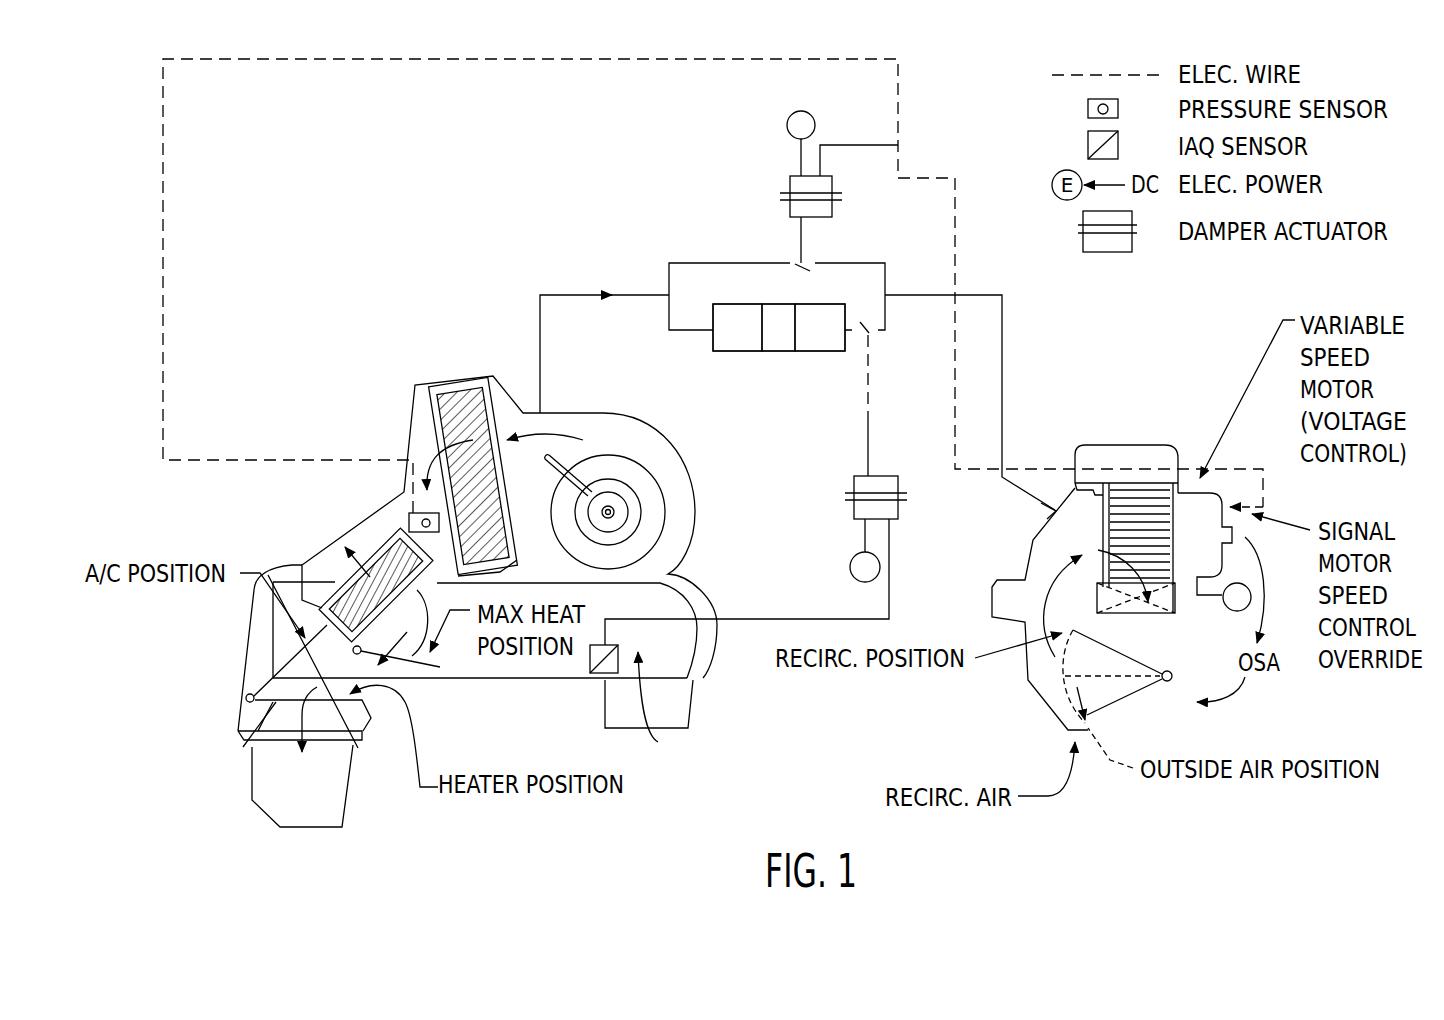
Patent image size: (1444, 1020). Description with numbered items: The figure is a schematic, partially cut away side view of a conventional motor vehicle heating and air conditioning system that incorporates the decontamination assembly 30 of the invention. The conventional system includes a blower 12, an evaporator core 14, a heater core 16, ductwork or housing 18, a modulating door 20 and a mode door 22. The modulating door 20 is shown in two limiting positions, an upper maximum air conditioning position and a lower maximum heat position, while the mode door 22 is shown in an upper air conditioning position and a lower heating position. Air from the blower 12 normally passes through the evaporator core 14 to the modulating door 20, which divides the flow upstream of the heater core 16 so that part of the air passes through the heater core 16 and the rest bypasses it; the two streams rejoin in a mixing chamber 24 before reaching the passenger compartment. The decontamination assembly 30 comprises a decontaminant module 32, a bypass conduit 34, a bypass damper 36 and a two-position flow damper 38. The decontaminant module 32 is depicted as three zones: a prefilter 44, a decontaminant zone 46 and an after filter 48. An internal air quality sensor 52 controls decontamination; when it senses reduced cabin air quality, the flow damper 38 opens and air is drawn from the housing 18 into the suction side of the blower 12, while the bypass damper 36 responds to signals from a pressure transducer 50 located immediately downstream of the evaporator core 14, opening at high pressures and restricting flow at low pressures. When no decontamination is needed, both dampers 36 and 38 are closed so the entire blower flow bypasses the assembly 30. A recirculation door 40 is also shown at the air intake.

The blower 12 is at (673, 502).
The evaporator core 14 is at (493, 380).
The heater core 16 is at (382, 542).
The ductwork or housing 18 is at (410, 410).
The modulating door 20 is at (396, 628).
The mode door 22 is at (243, 747).
The mixing chamber 24 is at (352, 753).
The decontamination assembly 30 is at (600, 198).
The decontaminant module 32 is at (704, 354).
The bypass conduit 34 is at (702, 263).
The bypass damper 36 is at (810, 258).
The two-position flow damper 38 is at (872, 337).
The recirculation door 40 is at (1128, 657).
The prefilter 44 is at (745, 345).
The decontaminant zone 46 is at (782, 337).
The after filter 48 is at (820, 342).
The pressure transducer 50 is at (423, 510).
The internal air quality sensor 52 is at (622, 673).